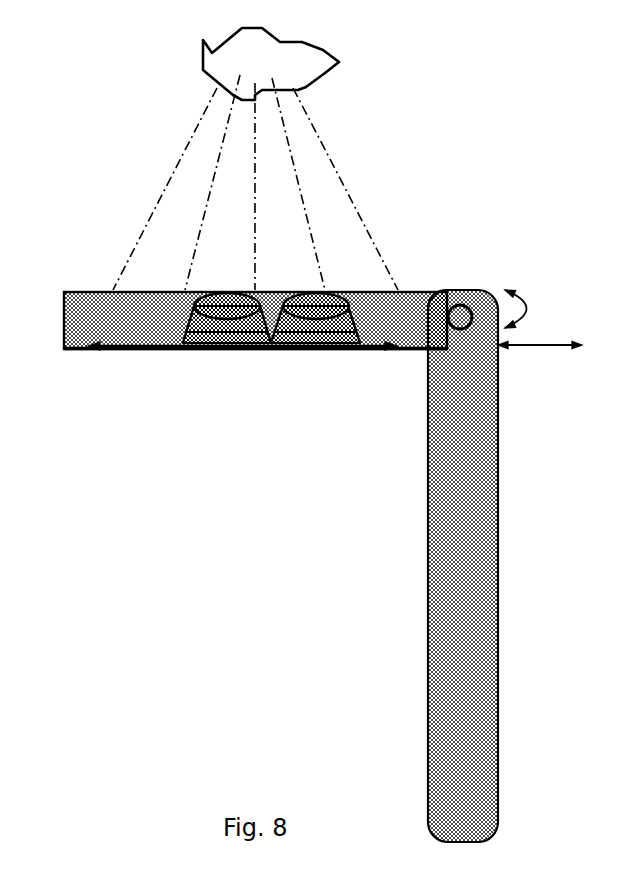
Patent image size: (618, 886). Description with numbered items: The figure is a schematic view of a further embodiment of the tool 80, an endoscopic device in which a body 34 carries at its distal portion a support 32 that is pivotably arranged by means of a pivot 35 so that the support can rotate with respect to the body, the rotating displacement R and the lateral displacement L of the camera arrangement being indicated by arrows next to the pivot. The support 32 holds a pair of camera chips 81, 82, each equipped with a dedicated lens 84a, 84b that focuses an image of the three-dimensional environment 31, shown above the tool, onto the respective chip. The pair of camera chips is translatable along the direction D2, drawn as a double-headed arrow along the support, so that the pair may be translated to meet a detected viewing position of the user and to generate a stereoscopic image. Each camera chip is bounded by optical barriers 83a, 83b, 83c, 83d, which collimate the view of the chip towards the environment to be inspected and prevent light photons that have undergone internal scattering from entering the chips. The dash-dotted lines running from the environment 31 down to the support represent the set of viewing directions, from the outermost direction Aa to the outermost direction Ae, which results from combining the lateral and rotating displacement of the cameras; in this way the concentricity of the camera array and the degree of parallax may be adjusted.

The three-dimensional environment 31 is at (208, 65).
The support 32 is at (445, 283).
The body 34 is at (428, 712).
The pivot 35 is at (468, 303).
The tool 80 is at (503, 98).
The camera chip 81 is at (213, 352).
The camera chip 82 is at (317, 353).
The optical barrier 83a is at (160, 350).
The optical barrier 83b is at (252, 353).
The optical barrier 83c is at (282, 353).
The optical barrier 83d is at (358, 353).
The lens 84a is at (212, 290).
The lens 84b is at (303, 285).
The viewing direction Aa is at (163, 188).
The viewing direction Ae is at (330, 158).
The translation direction D2 is at (127, 350).
The lateral displacement L is at (513, 353).
The rotating displacement R is at (527, 295).